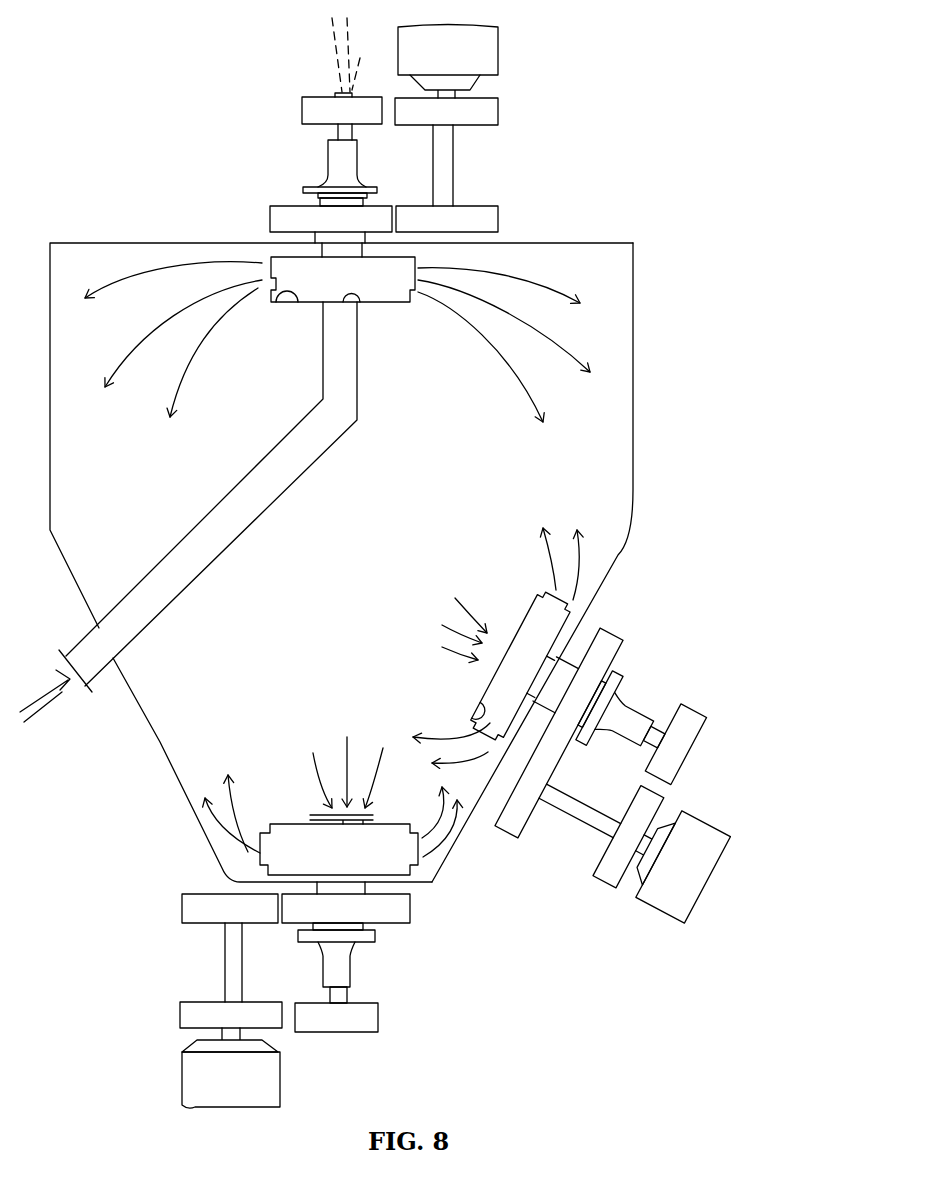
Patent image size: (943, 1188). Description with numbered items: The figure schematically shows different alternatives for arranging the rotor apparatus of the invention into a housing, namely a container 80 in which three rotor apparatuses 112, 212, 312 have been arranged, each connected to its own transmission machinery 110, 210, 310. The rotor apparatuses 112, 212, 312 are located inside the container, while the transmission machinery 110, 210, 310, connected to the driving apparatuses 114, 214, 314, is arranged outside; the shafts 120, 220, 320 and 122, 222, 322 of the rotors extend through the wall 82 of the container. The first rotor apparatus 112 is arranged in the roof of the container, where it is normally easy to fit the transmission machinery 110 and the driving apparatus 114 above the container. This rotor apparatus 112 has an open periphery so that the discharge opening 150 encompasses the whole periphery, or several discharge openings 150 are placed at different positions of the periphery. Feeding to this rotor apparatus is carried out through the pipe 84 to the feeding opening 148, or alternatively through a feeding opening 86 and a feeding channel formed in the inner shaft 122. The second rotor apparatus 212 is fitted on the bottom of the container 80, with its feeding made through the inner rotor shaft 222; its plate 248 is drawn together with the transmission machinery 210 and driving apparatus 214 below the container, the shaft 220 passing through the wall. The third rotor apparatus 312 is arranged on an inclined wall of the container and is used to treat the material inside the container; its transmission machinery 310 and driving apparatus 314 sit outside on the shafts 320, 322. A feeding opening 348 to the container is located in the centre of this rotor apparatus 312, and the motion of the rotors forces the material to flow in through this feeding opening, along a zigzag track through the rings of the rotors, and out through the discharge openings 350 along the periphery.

The container 80 is at (478, 487).
The wall 82 is at (635, 327).
The pipe 84 is at (205, 550).
The feeding opening 86 is at (333, 92).
The transmission machinery 110 is at (512, 216).
The rotor apparatus 112 is at (417, 298).
The driving apparatus 114 is at (483, 52).
The shaft 120 is at (310, 201).
The inner shaft 122 is at (340, 132).
The feeding opening 148 is at (383, 304).
The discharge opening 150 is at (293, 303).
The transmission machinery 210 is at (145, 905).
The rotor apparatus 212 is at (283, 843).
The driving apparatus 214 is at (200, 1072).
The shaft 220 is at (363, 925).
The inner rotor shaft 222 is at (347, 998).
The collector plate 248 is at (343, 830).
The transmission machinery 310 is at (620, 627).
The rotor apparatus 312 is at (528, 613).
The driving apparatus 314 is at (663, 893).
The shaft 320 is at (588, 728).
The shaft 322 is at (700, 660).
The feeding opening 348 is at (487, 680).
The discharge openings 350 is at (478, 714).